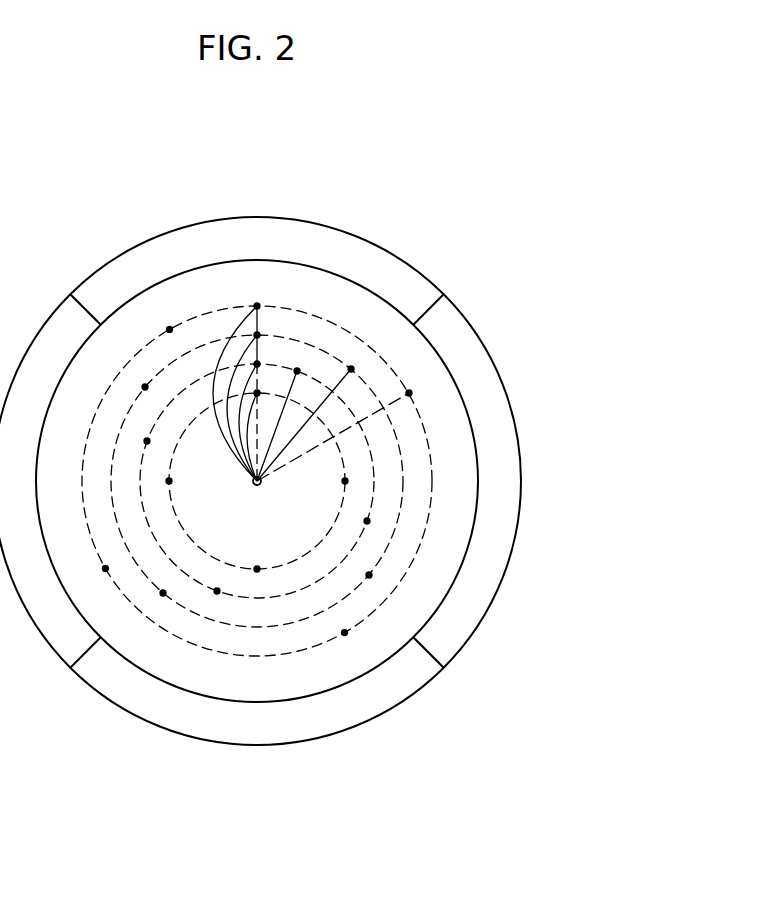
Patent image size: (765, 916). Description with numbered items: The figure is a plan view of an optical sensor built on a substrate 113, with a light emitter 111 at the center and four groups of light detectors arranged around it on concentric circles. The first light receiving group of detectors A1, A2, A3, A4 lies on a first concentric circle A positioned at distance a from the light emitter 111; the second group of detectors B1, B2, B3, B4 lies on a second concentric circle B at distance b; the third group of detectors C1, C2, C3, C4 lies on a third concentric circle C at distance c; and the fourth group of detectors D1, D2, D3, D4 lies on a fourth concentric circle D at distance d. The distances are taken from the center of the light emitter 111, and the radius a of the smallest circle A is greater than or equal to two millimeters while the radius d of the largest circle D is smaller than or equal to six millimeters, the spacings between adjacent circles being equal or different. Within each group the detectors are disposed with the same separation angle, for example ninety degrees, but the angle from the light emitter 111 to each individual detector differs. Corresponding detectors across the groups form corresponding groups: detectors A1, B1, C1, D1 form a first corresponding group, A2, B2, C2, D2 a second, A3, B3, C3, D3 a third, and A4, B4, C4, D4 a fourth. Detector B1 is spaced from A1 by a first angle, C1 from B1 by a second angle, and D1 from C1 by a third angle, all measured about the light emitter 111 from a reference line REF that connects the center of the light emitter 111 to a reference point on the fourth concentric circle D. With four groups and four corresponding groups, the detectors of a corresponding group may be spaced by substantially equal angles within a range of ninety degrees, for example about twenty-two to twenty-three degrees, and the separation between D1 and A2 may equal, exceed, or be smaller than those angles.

The substrate 113 is at (386, 250).
The light emitter 111 is at (252, 482).
The reference line REF is at (258, 311).
The first concentric circle A is at (307, 555).
The second concentric circle B is at (283, 597).
The third concentric circle C is at (255, 627).
The fourth concentric circle D is at (210, 650).
The radius of first concentric circle a is at (250, 437).
The radius of second concentric circle b is at (245, 422).
The radius of third concentric circle c is at (238, 408).
The radius of fourth concentric circle d is at (231, 393).
The light detector A1 is at (267, 381).
The light detector A2 is at (357, 479).
The light detector A3 is at (255, 582).
The light detector A4 is at (156, 483).
The light detector B1 is at (302, 359).
The light detector B2 is at (378, 525).
The light detector B3 is at (212, 604).
The light detector B4 is at (135, 441).
The light detector C1 is at (359, 359).
The light detector C2 is at (381, 582).
The light detector C3 is at (154, 606).
The light detector C4 is at (133, 385).
The light detector D1 is at (420, 384).
The light detector D2 is at (353, 646).
The light detector D3 is at (94, 580).
The light detector D4 is at (160, 320).